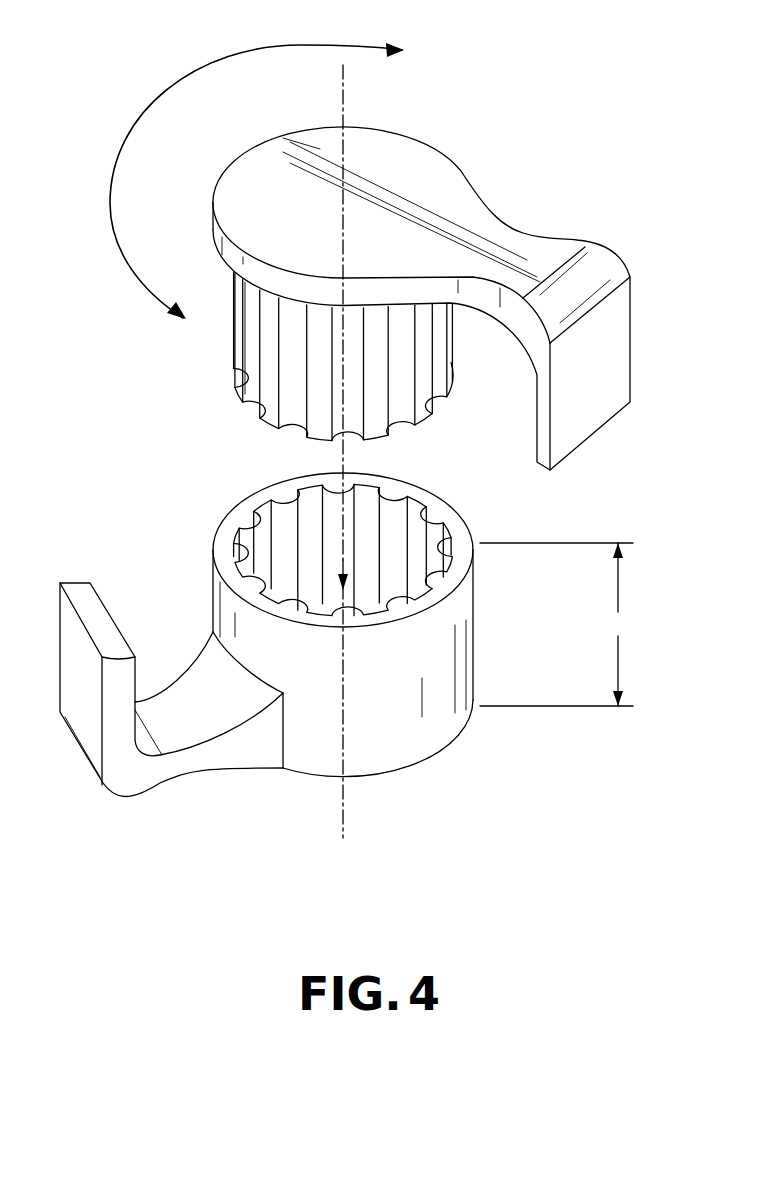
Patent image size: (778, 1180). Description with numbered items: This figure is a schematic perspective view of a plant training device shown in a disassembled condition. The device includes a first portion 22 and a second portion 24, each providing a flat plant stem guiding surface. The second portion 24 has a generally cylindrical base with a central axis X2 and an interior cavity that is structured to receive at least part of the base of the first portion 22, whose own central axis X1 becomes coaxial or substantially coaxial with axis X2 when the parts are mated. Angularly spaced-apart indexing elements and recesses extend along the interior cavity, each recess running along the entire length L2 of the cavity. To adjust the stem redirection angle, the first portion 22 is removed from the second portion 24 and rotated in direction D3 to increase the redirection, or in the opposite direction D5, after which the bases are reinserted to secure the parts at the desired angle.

The first portion 22 is at (425, 138).
The second portion 24 is at (420, 763).
The central axis X1 is at (343, 108).
The central axis X2 is at (343, 815).
The direction D3 is at (147, 317).
The opposite direction D5 is at (257, 162).
The entire length L2 is at (557, 624).